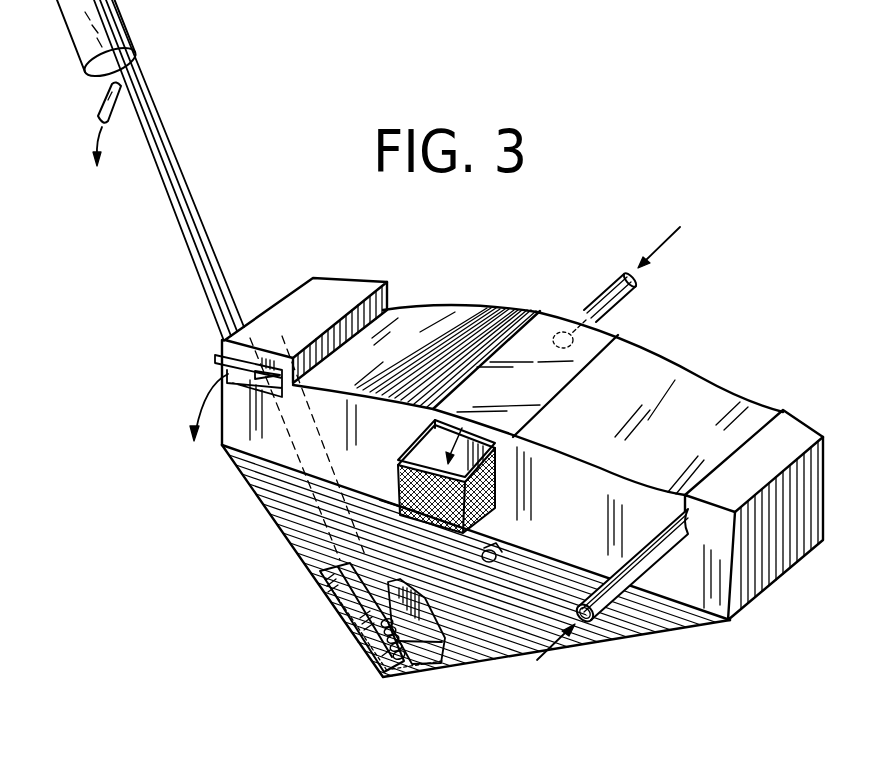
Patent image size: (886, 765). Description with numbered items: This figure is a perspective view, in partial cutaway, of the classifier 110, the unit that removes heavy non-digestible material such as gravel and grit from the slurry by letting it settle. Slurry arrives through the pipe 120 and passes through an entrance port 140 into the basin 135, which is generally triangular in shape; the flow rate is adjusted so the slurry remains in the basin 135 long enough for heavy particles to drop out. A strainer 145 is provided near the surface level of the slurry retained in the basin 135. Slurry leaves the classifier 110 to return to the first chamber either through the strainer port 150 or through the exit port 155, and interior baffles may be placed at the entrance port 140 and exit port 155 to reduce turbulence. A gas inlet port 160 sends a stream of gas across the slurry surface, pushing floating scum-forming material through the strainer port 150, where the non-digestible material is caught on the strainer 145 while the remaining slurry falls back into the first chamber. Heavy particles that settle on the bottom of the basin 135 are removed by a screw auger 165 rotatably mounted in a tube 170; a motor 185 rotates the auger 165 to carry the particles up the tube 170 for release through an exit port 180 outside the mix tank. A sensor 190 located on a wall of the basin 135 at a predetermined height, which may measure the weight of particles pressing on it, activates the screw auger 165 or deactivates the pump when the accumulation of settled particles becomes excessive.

The classifier 110 is at (690, 447).
The pipe 120 is at (605, 592).
The basin 135 is at (506, 632).
The entrance port 140 is at (736, 514).
The strainer 145 is at (403, 506).
The strainer port 150 is at (505, 445).
The exit port 155 is at (218, 364).
The gas inlet port 160 is at (602, 298).
The screw auger 165 is at (415, 668).
The tube 170 is at (210, 272).
The exit port 180 is at (100, 107).
The motor 185 is at (117, 29).
The sensor 190 is at (488, 574).